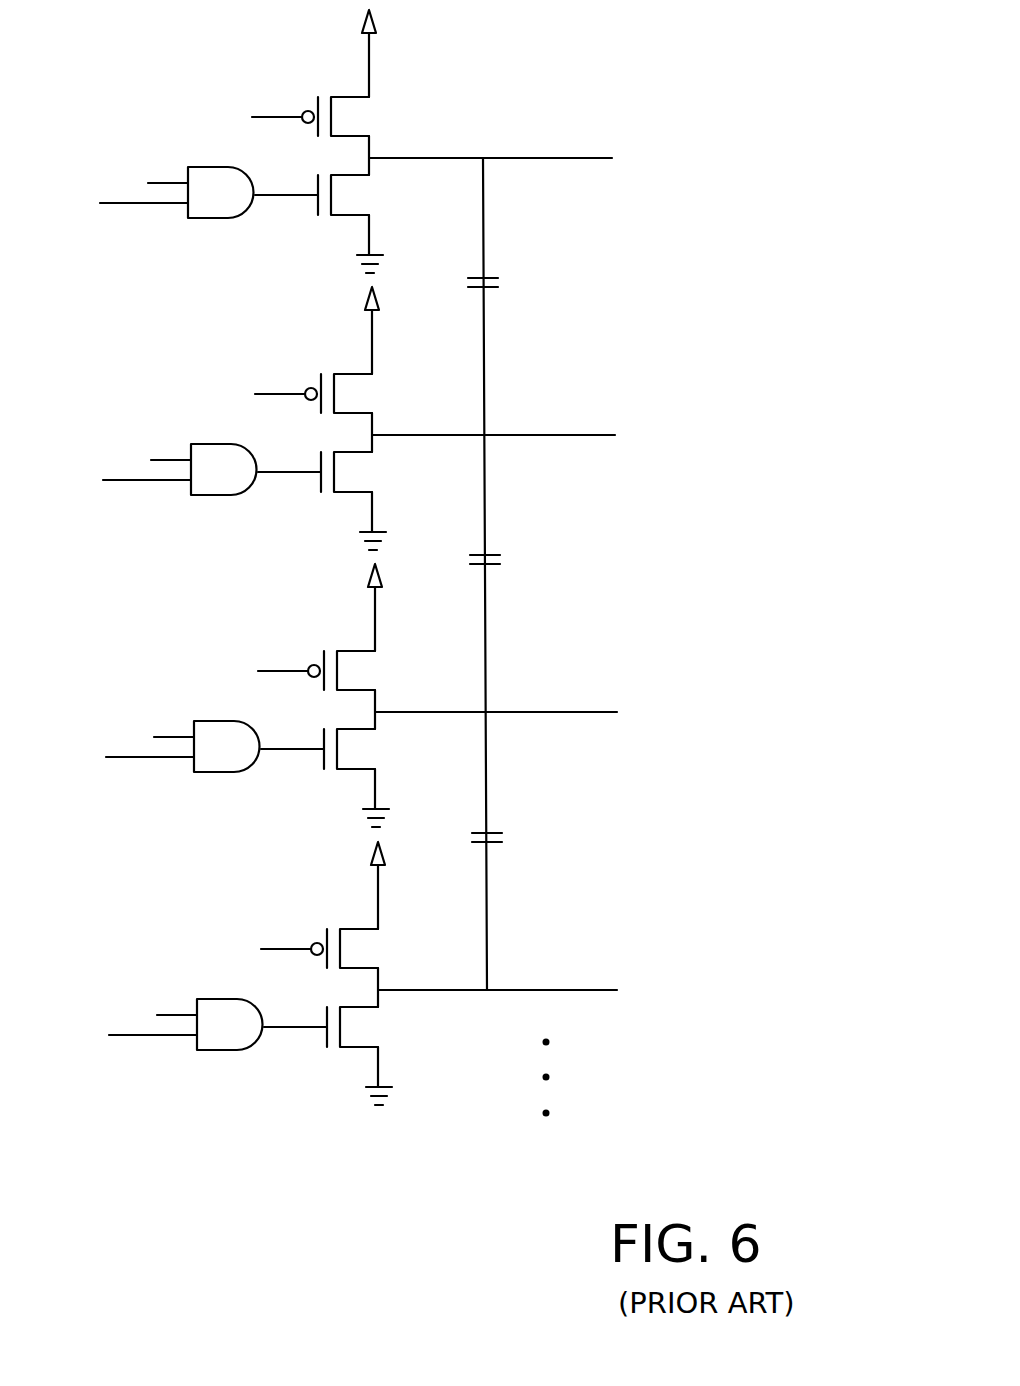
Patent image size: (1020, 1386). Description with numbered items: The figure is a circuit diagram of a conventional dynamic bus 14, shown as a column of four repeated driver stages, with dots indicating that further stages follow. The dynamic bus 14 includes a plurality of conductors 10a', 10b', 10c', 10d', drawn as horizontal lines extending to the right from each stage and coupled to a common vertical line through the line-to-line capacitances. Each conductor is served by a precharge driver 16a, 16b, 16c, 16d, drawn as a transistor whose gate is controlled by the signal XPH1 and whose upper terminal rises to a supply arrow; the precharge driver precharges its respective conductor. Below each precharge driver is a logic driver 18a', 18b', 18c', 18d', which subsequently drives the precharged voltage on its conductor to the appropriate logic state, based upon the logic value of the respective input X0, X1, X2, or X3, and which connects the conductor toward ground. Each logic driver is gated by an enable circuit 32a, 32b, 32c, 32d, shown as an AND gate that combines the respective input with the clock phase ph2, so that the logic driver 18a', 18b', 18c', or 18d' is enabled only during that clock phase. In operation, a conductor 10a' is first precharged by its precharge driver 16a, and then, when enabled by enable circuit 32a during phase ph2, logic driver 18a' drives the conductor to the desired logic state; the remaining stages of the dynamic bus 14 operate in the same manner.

The dynamic bus 14 is at (543, 50).
The precharge driver 16a is at (355, 118).
The precharge driver 16b is at (343, 385).
The precharge driver 16c is at (345, 662).
The precharge driver 16d is at (349, 940).
The logic driver 18a' is at (357, 224).
The logic driver 18b' is at (360, 501).
The logic driver 18c' is at (362, 778).
The logic driver 18d' is at (366, 1056).
The enable circuit 32a is at (215, 220).
The enable circuit 32b is at (197, 477).
The enable circuit 32c is at (199, 754).
The enable circuit 32d is at (203, 1032).
The conductor 10a' is at (515, 140).
The conductor 10b' is at (518, 417).
The conductor 10c' is at (507, 692).
The conductor 10d' is at (513, 969).